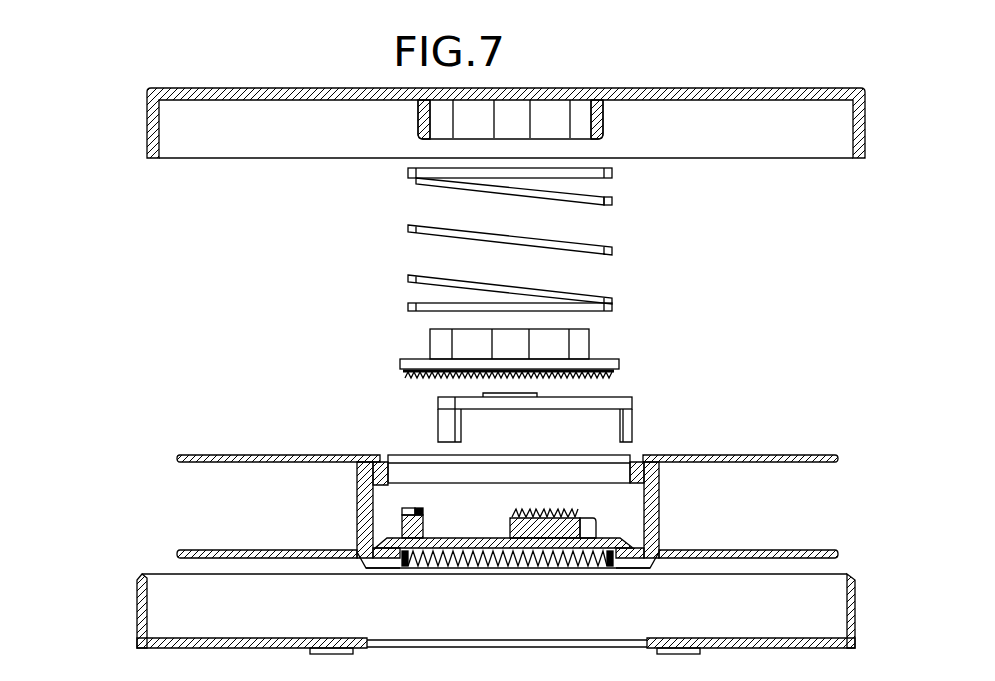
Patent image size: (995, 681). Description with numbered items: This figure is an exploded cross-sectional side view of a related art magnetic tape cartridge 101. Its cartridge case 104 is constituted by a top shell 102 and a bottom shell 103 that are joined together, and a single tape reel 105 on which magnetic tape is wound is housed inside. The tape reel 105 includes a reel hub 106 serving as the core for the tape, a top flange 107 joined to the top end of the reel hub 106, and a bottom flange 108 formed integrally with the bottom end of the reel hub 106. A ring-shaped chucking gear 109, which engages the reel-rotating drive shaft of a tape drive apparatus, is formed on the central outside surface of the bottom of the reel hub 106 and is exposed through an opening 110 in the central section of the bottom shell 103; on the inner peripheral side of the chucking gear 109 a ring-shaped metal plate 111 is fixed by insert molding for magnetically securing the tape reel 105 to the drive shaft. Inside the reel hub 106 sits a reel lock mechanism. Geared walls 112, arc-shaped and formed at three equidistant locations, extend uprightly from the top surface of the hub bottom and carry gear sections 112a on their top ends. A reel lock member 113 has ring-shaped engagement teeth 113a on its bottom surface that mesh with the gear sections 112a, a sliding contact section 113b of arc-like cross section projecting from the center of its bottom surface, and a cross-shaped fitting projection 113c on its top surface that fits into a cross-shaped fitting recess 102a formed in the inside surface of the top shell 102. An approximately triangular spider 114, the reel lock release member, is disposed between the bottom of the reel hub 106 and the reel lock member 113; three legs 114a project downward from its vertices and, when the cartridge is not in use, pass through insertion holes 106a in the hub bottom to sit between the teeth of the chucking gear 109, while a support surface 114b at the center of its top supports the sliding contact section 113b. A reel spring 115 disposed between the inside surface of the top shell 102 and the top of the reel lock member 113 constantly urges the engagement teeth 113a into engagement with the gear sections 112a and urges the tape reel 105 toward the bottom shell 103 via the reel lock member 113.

The magnetic tape cartridge 101 is at (92, 149).
The top shell 102 is at (147, 127).
The fitting recess 102a is at (557, 118).
The bottom shell 103 is at (133, 608).
The cartridge case 104 is at (100, 226).
The tape reel 105 is at (205, 375).
The reel hub 106 is at (290, 455).
The insertion holes 106a is at (625, 556).
The top flange 107 is at (356, 492).
The bottom flange 108 is at (258, 550).
The chucking gear 109 is at (393, 566).
The opening 110 is at (643, 638).
The metal plate 111 is at (571, 569).
The geared walls 112 is at (401, 530).
The gear sections 112a is at (593, 512).
The reel lock member 113 is at (608, 353).
The engagement teeth 113a is at (425, 379).
The sliding contact section 113b is at (497, 380).
The fitting projection 113c is at (447, 349).
The spider 114 is at (632, 403).
The legs 114a is at (443, 422).
The support surface 114b is at (483, 393).
The reel spring 115 is at (590, 247).